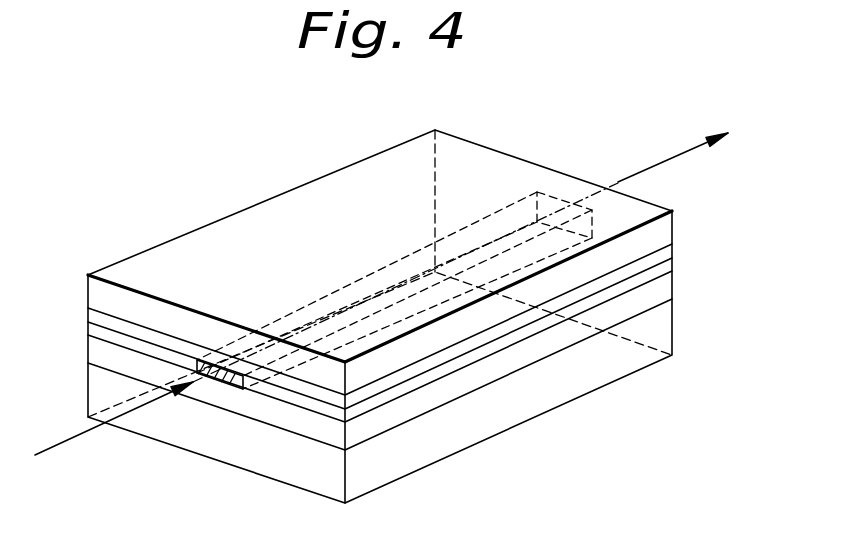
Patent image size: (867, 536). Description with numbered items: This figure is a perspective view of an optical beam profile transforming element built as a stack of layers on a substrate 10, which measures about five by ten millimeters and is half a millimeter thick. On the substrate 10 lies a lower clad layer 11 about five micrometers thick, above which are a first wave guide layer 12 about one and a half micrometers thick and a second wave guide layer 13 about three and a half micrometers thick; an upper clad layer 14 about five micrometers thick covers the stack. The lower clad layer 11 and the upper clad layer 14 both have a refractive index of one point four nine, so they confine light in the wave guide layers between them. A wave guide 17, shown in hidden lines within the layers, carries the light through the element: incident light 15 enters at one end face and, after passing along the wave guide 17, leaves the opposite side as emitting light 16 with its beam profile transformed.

The substrate 10 is at (672, 333).
The lower clad layer 11 is at (672, 290).
The first wave guide layer 12 is at (672, 265).
The second wave guide layer 13 is at (672, 250).
The upper clad layer 14 is at (672, 228).
The incident light 15 is at (65, 443).
The emitting light 16 is at (681, 153).
The wave guide 17 is at (383, 262).